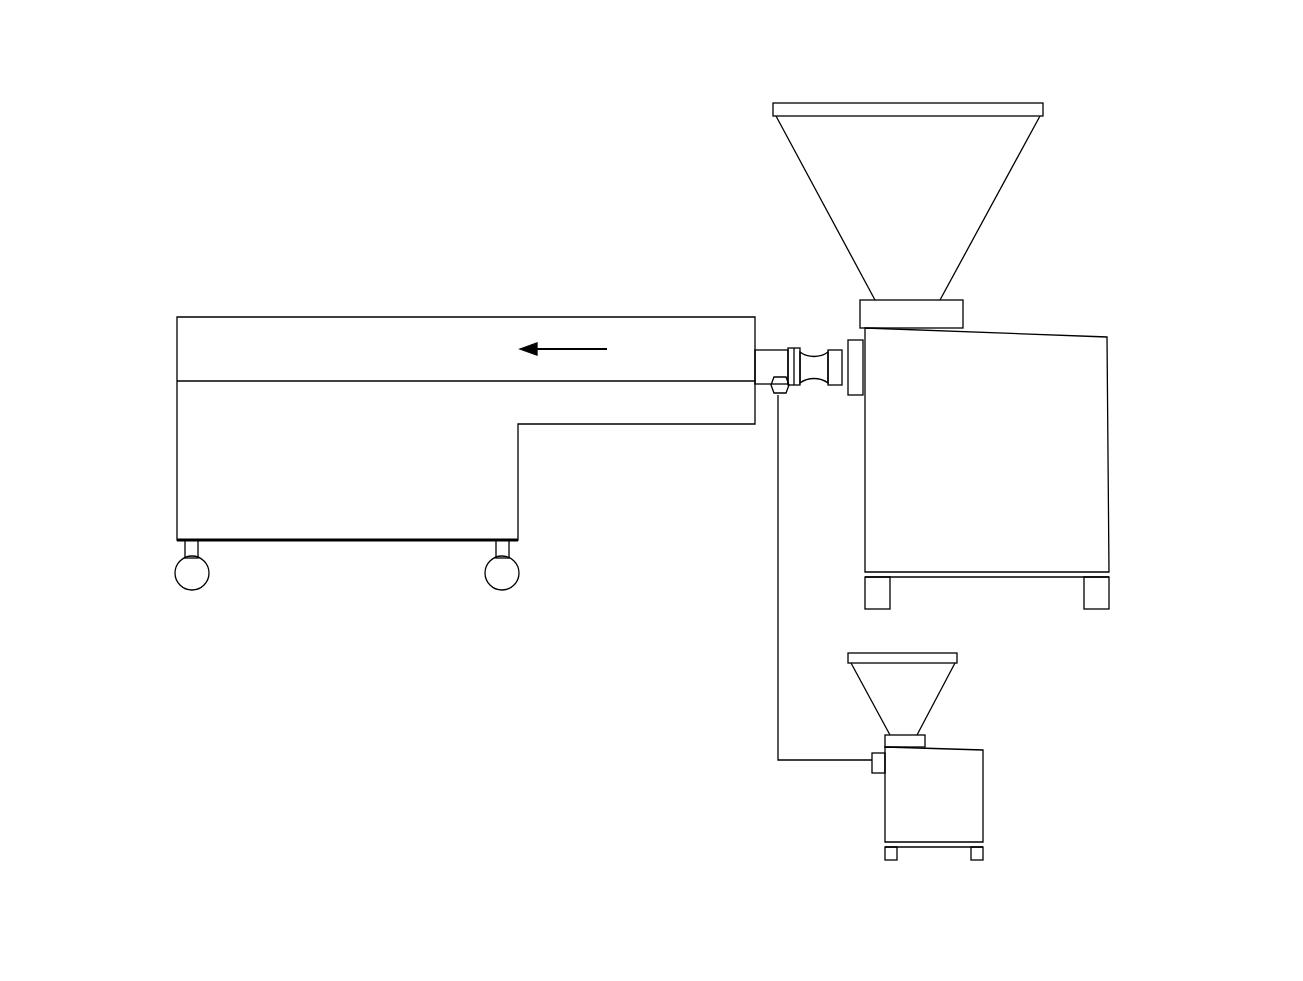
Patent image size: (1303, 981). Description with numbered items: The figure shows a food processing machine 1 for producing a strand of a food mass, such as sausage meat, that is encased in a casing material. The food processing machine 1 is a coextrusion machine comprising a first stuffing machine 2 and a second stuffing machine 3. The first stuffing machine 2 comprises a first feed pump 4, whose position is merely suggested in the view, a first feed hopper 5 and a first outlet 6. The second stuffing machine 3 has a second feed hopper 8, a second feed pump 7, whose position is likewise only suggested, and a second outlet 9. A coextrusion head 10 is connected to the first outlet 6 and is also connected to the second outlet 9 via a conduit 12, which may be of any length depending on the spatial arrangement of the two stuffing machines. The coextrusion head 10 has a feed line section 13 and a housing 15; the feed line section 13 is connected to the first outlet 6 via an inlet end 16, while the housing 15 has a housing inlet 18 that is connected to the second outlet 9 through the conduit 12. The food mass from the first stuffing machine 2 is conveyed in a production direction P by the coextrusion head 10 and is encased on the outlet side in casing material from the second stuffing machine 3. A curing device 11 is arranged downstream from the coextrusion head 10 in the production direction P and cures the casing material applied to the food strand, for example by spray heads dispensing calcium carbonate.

The food processing machine 1 is at (213, 217).
The first stuffing machine 2 is at (1041, 254).
The second stuffing machine 3 is at (1030, 775).
The first feed pump 4 is at (1033, 370).
The first feed hopper 5 is at (975, 173).
The first outlet 6 is at (853, 335).
The second feed pump 7 is at (945, 765).
The second feed hopper 8 is at (905, 725).
The second outlet 9 is at (880, 760).
The coextrusion head 10 is at (779, 318).
The curing device 11 is at (464, 314).
The conduit 12 is at (778, 568).
The feed line section 13 is at (798, 345).
The housing 15 is at (768, 350).
The inlet end 16 is at (833, 385).
The housing inlet 18 is at (780, 400).
The production direction P is at (567, 349).